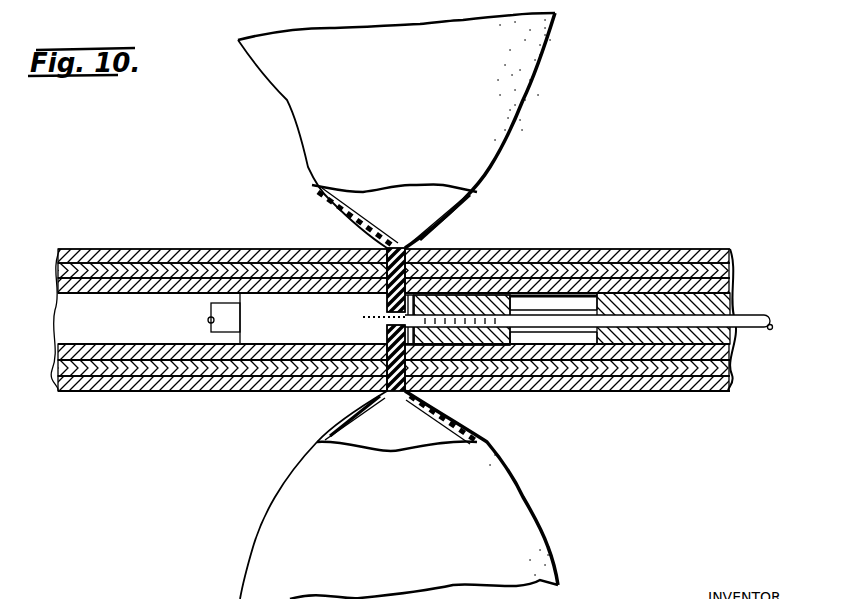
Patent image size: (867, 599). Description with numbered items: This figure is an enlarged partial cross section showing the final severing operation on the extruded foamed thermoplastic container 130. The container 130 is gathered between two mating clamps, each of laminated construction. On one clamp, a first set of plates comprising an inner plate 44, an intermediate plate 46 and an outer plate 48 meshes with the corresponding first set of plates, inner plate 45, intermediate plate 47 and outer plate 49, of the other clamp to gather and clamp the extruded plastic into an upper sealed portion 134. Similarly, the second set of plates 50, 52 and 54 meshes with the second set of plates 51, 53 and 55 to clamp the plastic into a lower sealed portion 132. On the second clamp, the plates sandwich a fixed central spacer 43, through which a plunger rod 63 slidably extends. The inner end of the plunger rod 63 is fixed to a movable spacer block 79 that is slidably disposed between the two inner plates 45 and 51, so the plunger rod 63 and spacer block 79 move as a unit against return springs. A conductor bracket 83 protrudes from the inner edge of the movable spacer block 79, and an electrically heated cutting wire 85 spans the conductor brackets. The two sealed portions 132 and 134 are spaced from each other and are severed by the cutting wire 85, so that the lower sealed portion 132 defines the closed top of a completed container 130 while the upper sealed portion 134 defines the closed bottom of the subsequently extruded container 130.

The container 130 is at (354, 97).
The lower sealed portion 132 is at (387, 331).
The upper sealed portion 134 is at (387, 298).
The central spacer 43 is at (720, 306).
The inner plate 44 is at (70, 289).
The inner plate 45 is at (724, 289).
The intermediate plate 46 is at (70, 272).
The intermediate plate 47 is at (724, 272).
The outer plate 48 is at (80, 254).
The outer plate 49 is at (730, 254).
The inner plate 50 is at (62, 352).
The inner plate 51 is at (722, 352).
The intermediate plate 52 is at (65, 372).
The intermediate plate 53 is at (724, 372).
The outer plate 54 is at (72, 382).
The outer plate 55 is at (715, 383).
The plunger rod 63 is at (770, 322).
The movable spacer block 79 is at (457, 342).
The conductor bracket 83 is at (216, 329).
The cutting wire 85 is at (208, 320).